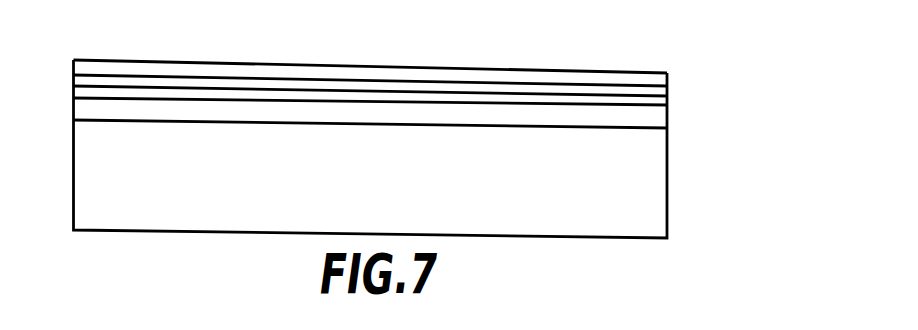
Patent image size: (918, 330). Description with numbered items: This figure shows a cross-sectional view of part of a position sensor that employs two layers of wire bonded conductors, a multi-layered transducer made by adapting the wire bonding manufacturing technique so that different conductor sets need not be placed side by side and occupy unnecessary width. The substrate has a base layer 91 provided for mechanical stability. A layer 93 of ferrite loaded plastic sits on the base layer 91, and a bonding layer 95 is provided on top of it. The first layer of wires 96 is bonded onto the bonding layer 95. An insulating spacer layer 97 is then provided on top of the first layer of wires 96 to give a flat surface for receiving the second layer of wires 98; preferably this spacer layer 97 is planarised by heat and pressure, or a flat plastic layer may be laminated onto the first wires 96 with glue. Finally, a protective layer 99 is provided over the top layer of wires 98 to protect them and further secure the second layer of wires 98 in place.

The base layer 91 is at (650, 180).
The layer of ferrite loaded plastic 93 is at (653, 120).
The bonding layer 95 is at (667, 98).
The first layer of wires 96 is at (559, 88).
The insulating spacer layer 97 is at (668, 88).
The second layer of wires 98 is at (628, 82).
The protective layer 99 is at (668, 72).